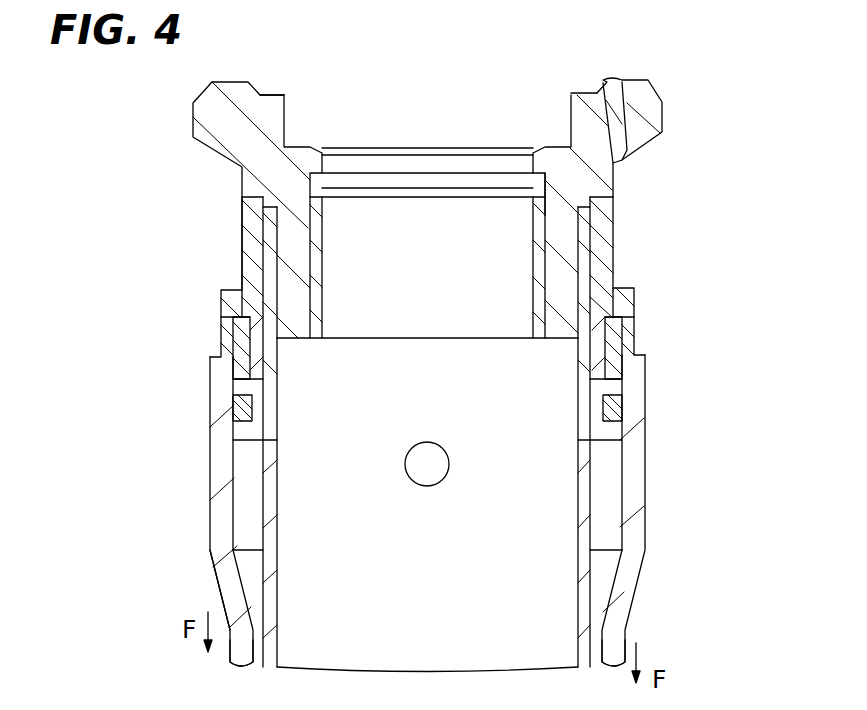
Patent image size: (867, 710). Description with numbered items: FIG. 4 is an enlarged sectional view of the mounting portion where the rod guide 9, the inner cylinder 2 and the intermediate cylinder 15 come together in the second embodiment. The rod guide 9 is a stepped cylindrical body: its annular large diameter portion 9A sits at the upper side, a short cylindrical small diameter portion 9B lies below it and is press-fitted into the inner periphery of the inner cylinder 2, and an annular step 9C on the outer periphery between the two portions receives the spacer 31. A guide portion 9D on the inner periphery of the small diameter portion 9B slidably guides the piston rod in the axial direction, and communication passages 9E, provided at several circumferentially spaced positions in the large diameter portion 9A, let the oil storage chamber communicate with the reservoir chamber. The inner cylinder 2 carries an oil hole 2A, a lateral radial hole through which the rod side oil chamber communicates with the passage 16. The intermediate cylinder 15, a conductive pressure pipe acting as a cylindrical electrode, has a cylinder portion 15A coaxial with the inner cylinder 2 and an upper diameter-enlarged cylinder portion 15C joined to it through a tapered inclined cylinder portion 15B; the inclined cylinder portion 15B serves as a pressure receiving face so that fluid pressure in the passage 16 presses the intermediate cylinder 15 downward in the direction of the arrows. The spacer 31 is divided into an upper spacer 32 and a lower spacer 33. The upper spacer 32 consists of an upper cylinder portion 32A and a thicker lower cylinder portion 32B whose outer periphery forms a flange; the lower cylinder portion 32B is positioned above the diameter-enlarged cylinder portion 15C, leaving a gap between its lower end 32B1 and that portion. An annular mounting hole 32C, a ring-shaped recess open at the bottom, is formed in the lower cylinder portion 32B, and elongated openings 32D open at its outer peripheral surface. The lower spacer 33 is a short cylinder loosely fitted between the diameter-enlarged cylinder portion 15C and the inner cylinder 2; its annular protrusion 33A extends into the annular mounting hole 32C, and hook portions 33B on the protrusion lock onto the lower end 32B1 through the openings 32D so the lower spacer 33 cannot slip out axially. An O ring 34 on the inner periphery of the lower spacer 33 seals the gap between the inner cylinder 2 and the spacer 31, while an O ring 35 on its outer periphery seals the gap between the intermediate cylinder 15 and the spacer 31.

The inner cylinder 2 is at (645, 560).
The oil hole 2A is at (263, 484).
The rod guide 9 is at (615, 167).
The large diameter portion 9A is at (222, 115).
The small diameter portion 9B is at (615, 230).
The annular step 9C is at (615, 203).
The guide portion 9D is at (310, 242).
The communication passage 9E is at (660, 108).
The intermediate cylinder 15 is at (207, 543).
The cylinder portion 15A is at (238, 655).
The tapered inclined cylinder portion 15B is at (628, 597).
The upper diameter-enlarged cylinder portion 15C is at (645, 400).
The passage 16 is at (245, 590).
The spacer 31 is at (242, 270).
The upper spacer 32 is at (615, 262).
The upper cylinder portion 32A is at (250, 225).
The lower cylinder portion 32B is at (214, 293).
The lower end 32B1 is at (640, 343).
The annular mounting hole 32C is at (218, 370).
The opening 32D is at (222, 330).
The lower spacer 33 is at (645, 445).
The annular protrusion 33A is at (222, 336).
The hook portion 33B is at (637, 330).
The O ring 34 is at (645, 375).
The O ring 35 is at (226, 414).